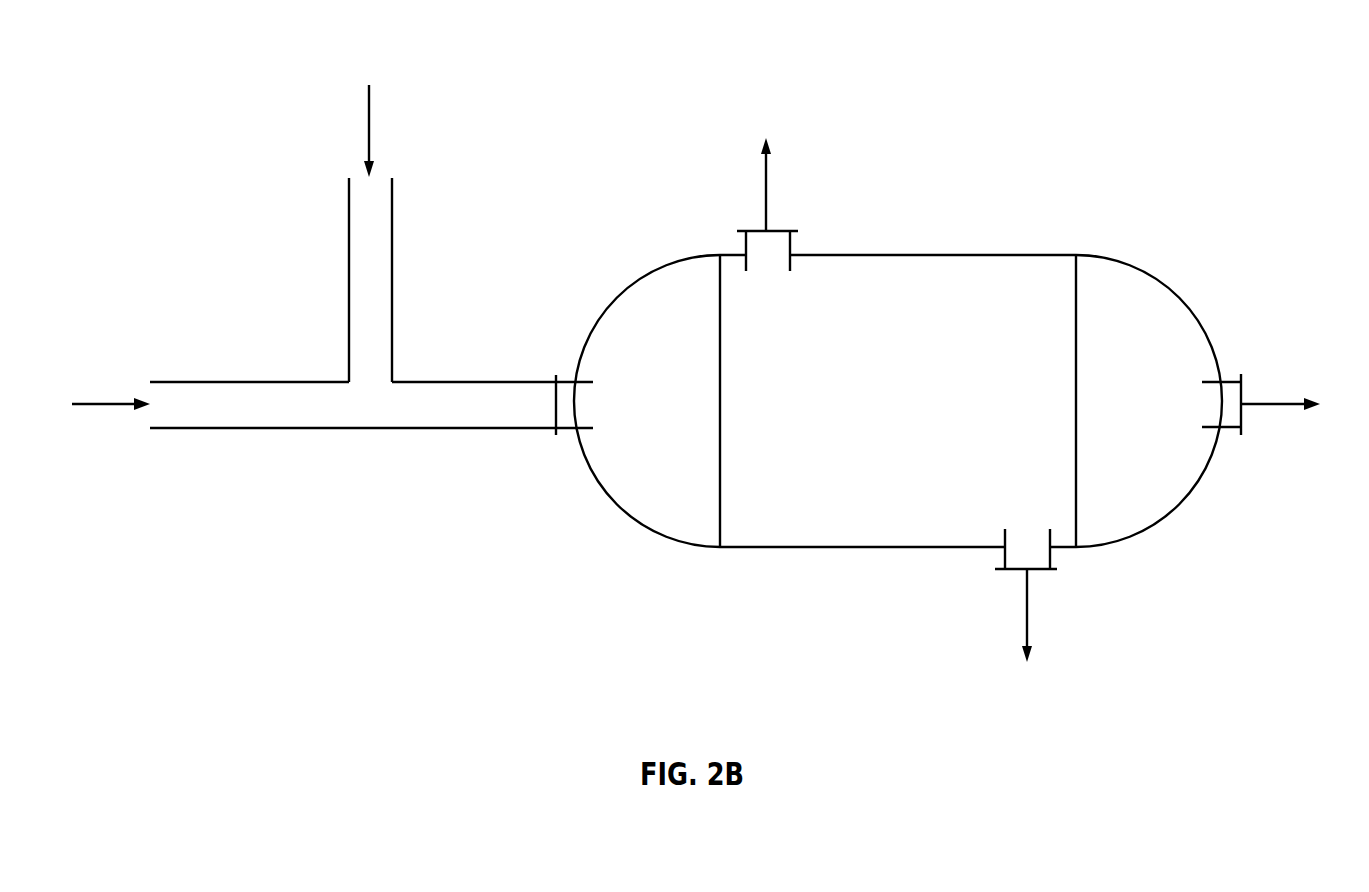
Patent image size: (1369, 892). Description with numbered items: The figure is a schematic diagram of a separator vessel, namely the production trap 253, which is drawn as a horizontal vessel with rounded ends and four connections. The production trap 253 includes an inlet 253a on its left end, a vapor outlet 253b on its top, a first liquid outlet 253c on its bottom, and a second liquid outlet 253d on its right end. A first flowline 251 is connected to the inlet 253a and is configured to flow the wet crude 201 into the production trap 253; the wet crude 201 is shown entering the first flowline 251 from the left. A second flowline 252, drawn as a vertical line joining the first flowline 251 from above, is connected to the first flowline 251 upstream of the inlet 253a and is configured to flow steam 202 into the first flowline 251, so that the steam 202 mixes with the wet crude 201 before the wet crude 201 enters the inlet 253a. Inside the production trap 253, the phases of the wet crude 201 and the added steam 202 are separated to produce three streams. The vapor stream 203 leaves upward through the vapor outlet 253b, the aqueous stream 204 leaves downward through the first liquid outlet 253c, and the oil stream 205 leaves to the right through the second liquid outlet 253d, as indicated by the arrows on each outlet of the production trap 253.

The wet crude 201 is at (108, 407).
The steam 202 is at (369, 133).
The vapor stream 203 is at (766, 186).
The aqueous stream 204 is at (1027, 600).
The oil stream 205 is at (1263, 405).
The first flowline 251 is at (285, 428).
The second flowline 252 is at (349, 285).
The production trap 253 is at (1255, 254).
The inlet 253a is at (568, 382).
The vapor outlet 253b is at (746, 248).
The first liquid outlet 253c is at (1000, 560).
The second liquid outlet 253d is at (1226, 380).